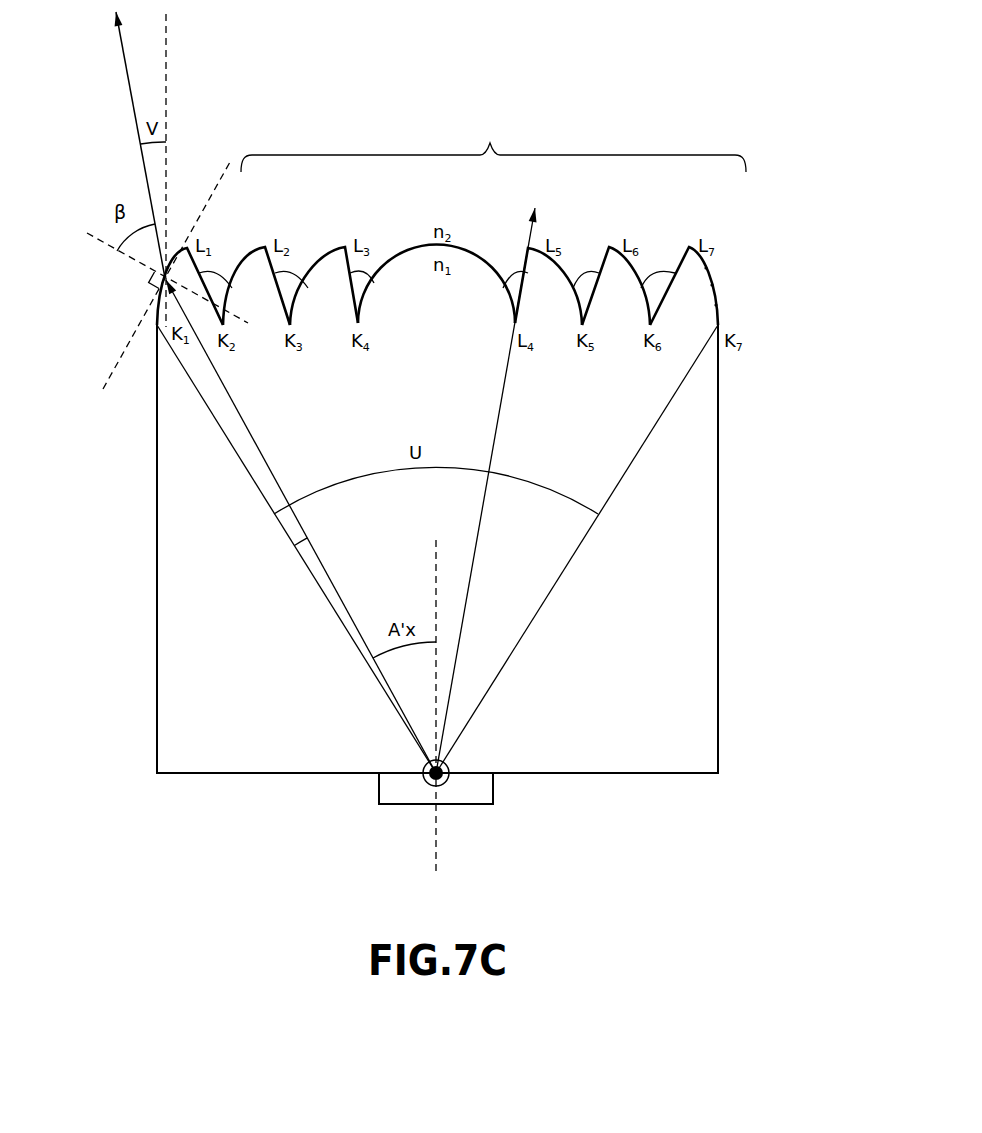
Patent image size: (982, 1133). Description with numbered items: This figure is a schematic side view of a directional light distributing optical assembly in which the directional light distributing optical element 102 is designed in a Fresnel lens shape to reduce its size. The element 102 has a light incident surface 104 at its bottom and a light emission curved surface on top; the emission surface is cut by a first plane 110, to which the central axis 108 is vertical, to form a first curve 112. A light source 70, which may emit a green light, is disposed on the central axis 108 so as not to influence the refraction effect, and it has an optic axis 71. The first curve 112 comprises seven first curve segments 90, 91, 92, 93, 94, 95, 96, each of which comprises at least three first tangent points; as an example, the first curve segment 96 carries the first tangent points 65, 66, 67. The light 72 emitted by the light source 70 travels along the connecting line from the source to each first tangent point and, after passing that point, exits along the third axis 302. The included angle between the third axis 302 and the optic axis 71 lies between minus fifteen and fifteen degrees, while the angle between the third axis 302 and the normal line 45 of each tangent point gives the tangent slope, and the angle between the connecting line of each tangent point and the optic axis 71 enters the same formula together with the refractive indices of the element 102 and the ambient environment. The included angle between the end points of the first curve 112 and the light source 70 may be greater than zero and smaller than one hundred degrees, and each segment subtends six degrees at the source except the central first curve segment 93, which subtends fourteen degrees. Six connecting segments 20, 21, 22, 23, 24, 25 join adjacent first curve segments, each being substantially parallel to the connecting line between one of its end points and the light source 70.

The third axis 302 is at (131, 97).
The normal line 45 is at (131, 256).
The first curve segment 90 is at (182, 246).
The first curve segment 91 is at (247, 256).
The first curve segment 92 is at (317, 256).
The first curve segment 93 is at (483, 259).
The first curve segment 94 is at (558, 258).
The first curve segment 95 is at (641, 258).
The first curve segment 96 is at (706, 254).
The connecting segment 20 is at (232, 288).
The connecting segment 21 is at (308, 288).
The connecting segment 22 is at (374, 283).
The connecting segment 23 is at (503, 288).
The connecting segment 24 is at (573, 288).
The connecting segment 25 is at (641, 288).
The first tangent point 65 is at (706, 268).
The first tangent point 66 is at (712, 285).
The first tangent point 67 is at (716, 305).
The first curve 112 is at (493, 145).
The directional light distributing optical element 102 is at (749, 474).
The first plane 110 is at (672, 653).
The light incident surface 104 is at (567, 775).
The light source 70 is at (400, 791).
The optic axis 71 is at (433, 828).
The central axis 108 is at (447, 781).
The light 72 is at (289, 541).